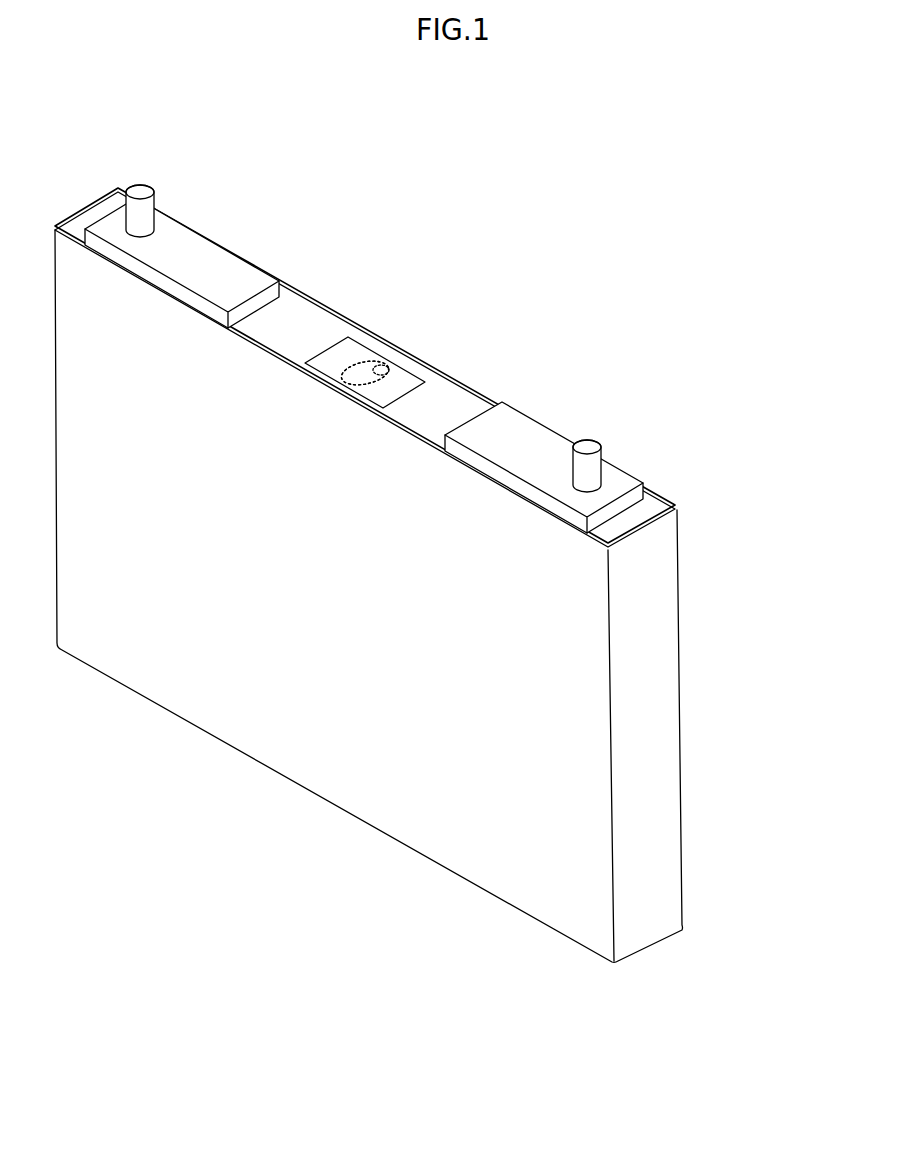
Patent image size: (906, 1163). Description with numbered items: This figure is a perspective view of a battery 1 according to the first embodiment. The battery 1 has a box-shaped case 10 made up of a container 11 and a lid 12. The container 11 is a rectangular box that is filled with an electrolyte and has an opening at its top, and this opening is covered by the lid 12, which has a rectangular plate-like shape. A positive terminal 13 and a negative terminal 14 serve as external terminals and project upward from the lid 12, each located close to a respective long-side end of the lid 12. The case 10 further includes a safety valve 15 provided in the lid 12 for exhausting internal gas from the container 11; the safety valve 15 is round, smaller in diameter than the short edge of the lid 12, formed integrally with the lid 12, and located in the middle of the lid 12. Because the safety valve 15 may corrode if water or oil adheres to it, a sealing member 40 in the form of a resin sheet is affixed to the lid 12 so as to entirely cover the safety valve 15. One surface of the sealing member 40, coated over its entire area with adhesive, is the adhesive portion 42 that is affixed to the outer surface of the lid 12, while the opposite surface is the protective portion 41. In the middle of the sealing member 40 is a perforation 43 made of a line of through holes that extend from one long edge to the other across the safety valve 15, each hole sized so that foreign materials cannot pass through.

The battery 1 is at (397, 199).
The case 10 is at (533, 181).
The container 11 is at (684, 539).
The lid 12 is at (473, 392).
The positive terminal 13 is at (607, 428).
The negative terminal 14 is at (164, 171).
The safety valve 15 is at (388, 366).
The sealing member 40 is at (402, 320).
The protective portion 41 is at (368, 384).
The adhesive portion 42 is at (342, 357).
The perforation 43 is at (392, 366).